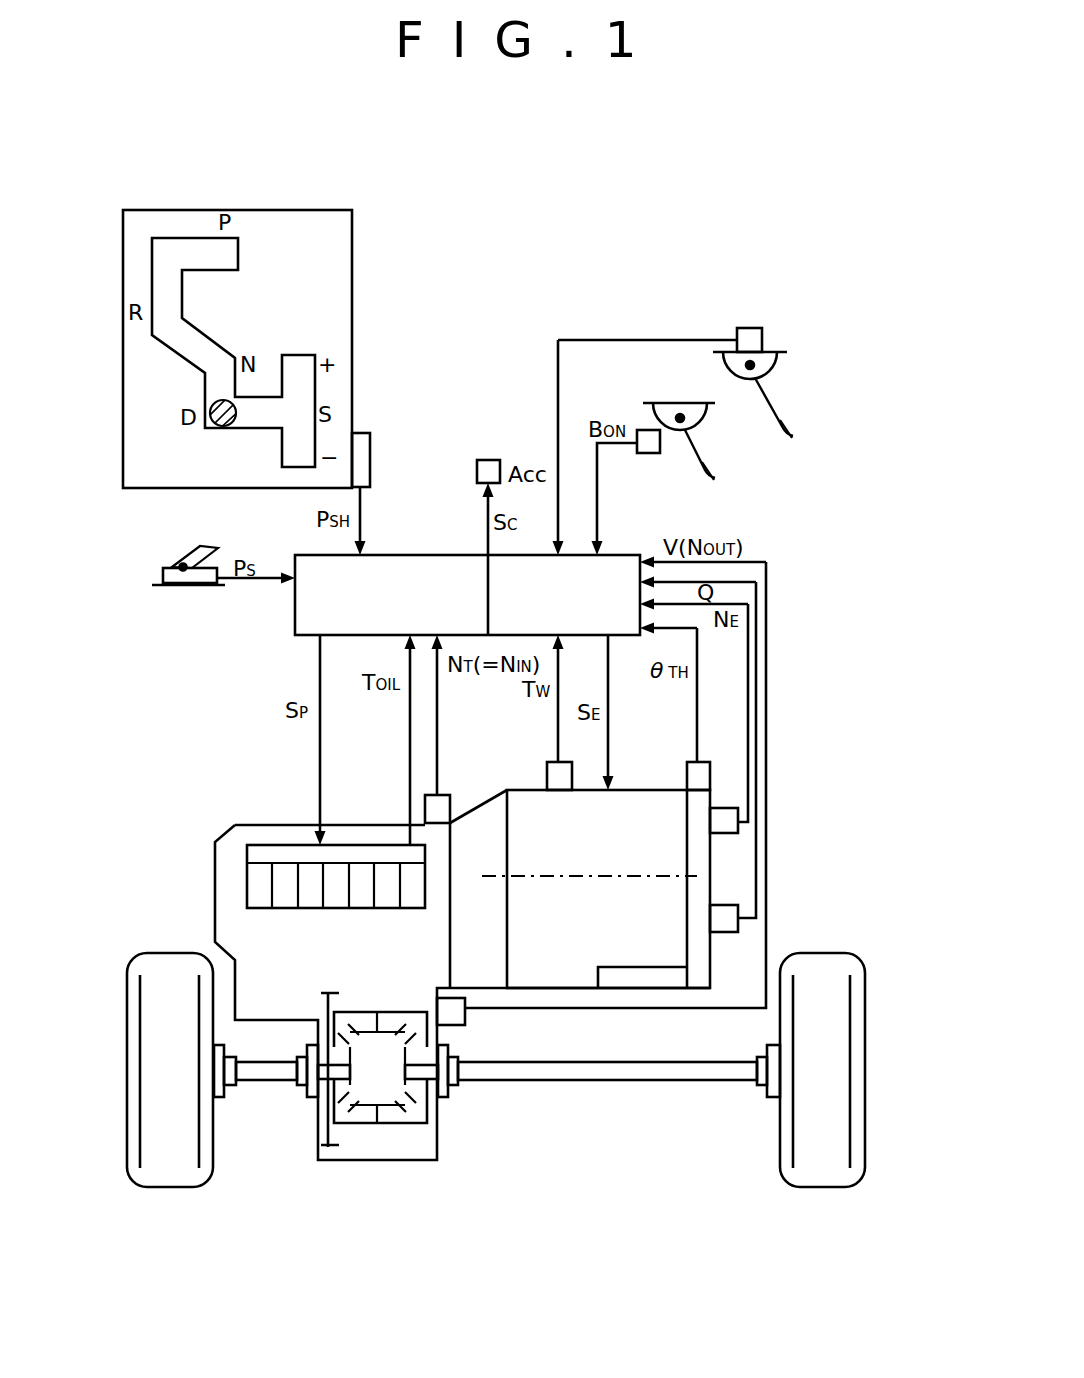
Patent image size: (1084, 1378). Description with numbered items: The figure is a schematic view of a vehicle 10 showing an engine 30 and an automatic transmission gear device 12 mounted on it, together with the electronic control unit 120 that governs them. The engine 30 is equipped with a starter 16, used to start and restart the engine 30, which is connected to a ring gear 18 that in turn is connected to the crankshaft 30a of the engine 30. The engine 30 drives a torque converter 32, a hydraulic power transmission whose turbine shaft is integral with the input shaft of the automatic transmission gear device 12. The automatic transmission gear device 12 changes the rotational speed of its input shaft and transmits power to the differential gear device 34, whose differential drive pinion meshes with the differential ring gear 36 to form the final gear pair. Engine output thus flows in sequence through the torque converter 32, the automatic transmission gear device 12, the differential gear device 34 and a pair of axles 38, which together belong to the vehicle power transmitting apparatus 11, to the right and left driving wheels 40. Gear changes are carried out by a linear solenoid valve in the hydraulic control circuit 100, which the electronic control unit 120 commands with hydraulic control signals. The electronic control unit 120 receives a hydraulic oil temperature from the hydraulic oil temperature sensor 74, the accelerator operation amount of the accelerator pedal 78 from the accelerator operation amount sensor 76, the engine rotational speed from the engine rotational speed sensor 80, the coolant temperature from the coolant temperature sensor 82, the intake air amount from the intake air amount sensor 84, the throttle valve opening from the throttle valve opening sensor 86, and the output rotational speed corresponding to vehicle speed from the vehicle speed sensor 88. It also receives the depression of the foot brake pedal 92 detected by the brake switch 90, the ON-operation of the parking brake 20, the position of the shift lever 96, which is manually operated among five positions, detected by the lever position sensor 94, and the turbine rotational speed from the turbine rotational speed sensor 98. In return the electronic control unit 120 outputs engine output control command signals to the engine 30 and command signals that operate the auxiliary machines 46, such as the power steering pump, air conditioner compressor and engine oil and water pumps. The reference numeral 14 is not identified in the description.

The vehicle 10 is at (639, 216).
The vehicle power transmitting apparatus 11 is at (203, 690).
The automatic transmission gear device 12 is at (228, 895).
The automatic transmission gear device 14 is at (263, 823).
The starter 16 is at (627, 978).
The ring gear 18 is at (697, 975).
The parking brake 20 is at (196, 548).
The engine 30 is at (524, 803).
The crankshaft 30a is at (648, 876).
The torque converter 32 is at (483, 828).
The differential gear device 34 is at (423, 1142).
The differential ring gear 36 is at (338, 1148).
The axles 38 is at (260, 1072).
The driving wheels 40 is at (173, 1172).
The auxiliary machines 46 is at (490, 462).
The hydraulic oil temperature sensor 74 is at (407, 849).
The accelerator operation amount sensor 76 is at (748, 333).
The accelerator pedal 78 is at (795, 437).
The engine rotational speed sensor 80 is at (727, 835).
The coolant temperature sensor 82 is at (549, 764).
The intake air amount sensor 84 is at (727, 933).
The throttle valve opening sensor 86 is at (705, 774).
The vehicle speed sensor 88 is at (456, 1012).
The brake switch 90 is at (648, 455).
The foot brake pedal 92 is at (717, 478).
The lever position sensor 94 is at (362, 433).
The shift lever 96 is at (213, 425).
The turbine rotational speed sensor 98 is at (439, 802).
The hydraulic control circuit 100 is at (257, 857).
The electronic control unit 120 is at (440, 555).